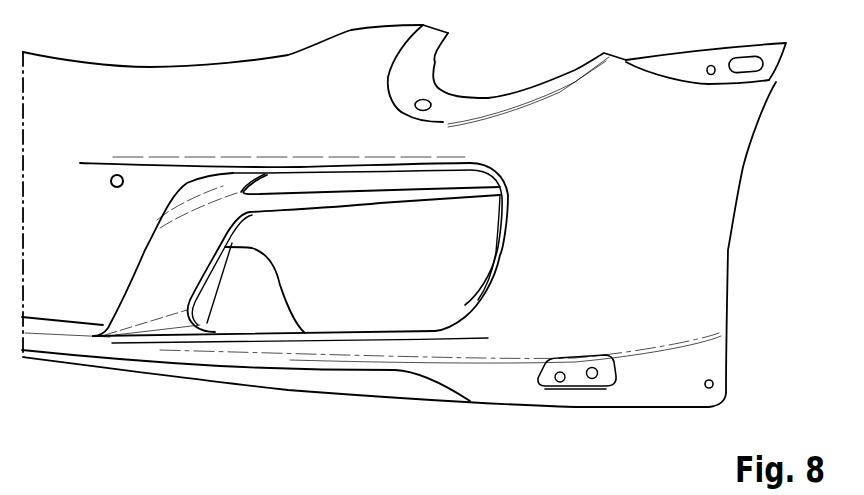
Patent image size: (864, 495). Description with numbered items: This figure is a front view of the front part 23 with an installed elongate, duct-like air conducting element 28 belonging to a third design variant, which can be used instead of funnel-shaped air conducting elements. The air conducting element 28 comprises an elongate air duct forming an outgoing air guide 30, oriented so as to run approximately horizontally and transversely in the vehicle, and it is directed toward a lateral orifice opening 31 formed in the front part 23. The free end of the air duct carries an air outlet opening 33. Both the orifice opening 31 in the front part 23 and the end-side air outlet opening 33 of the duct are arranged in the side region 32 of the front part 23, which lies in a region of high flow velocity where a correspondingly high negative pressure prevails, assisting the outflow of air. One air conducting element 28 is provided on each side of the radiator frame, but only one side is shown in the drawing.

The front part 23 is at (709, 233).
The air conducting element 28 is at (264, 308).
The outgoing air guide 30 is at (237, 323).
The orifice opening 31 is at (613, 382).
The side region 32 is at (752, 368).
The air outlet opening 33 is at (565, 377).